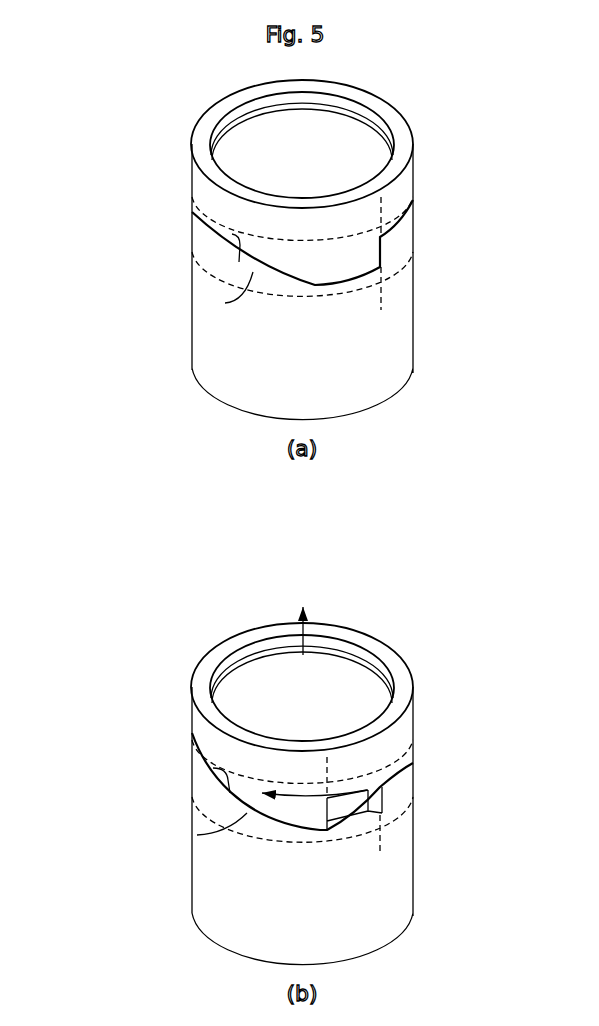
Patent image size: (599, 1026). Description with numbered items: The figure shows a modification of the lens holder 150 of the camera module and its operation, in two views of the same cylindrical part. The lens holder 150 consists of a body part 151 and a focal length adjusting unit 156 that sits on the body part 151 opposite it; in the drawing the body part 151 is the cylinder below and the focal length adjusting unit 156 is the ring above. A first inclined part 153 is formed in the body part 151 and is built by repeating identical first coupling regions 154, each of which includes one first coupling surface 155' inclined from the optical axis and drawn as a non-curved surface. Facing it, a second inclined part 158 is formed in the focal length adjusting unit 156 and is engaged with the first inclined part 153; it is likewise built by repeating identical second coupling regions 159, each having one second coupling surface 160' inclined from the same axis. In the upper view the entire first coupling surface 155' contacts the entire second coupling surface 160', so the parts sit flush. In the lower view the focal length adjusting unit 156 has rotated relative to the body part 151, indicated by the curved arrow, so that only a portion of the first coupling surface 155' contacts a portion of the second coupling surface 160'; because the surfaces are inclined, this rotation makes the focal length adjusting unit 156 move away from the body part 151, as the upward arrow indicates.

The lens holder 150 is at (443, 152).
The body part 151 is at (400, 332).
The slot 153 is at (298, 288).
The hidden groove line 154 is at (372, 290).
The first coupling surface 155' is at (140, 556).
The focal length adjusting unit 156 is at (405, 183).
The cam lower edge 158 is at (283, 272).
The hidden edge line 159 is at (420, 221).
The second coupling surface 160' is at (134, 513).